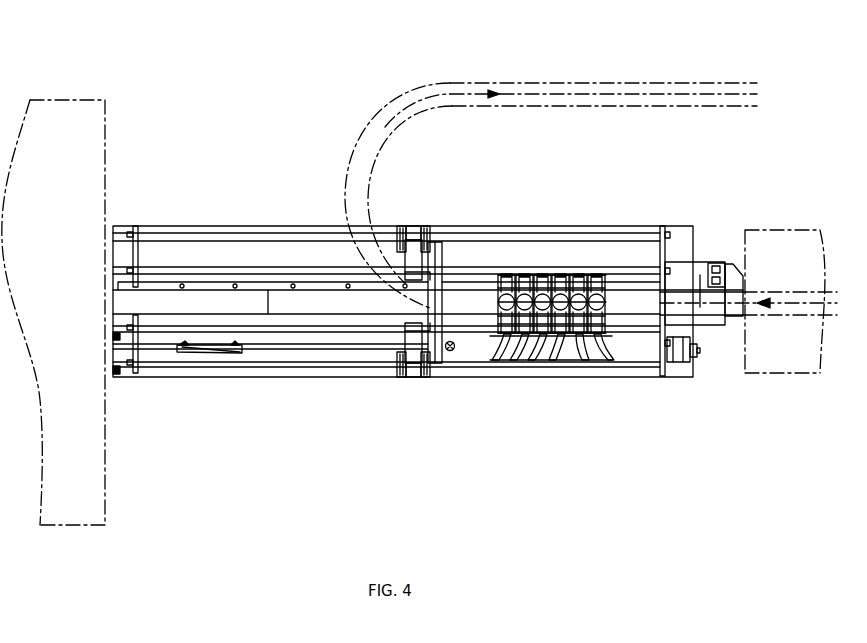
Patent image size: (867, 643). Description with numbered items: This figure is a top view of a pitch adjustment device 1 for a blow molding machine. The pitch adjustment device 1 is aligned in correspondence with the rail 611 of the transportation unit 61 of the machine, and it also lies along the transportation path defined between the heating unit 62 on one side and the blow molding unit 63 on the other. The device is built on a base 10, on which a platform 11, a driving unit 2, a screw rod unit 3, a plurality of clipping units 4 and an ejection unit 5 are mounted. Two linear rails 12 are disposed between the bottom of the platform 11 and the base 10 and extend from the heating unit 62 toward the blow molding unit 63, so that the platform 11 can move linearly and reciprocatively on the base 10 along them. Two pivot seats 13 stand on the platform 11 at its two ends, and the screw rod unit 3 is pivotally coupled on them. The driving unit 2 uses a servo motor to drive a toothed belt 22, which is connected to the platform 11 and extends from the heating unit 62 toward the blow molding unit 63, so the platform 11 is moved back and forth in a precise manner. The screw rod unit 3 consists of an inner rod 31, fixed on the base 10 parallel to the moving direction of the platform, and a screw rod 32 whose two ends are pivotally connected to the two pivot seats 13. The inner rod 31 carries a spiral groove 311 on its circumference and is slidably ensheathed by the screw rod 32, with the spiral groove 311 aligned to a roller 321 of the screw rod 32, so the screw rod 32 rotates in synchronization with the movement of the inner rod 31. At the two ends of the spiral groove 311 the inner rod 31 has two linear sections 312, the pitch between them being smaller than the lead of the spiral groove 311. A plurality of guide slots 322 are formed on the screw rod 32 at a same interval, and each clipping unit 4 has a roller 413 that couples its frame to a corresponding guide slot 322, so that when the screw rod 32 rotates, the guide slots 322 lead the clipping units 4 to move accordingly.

The pitch adjustment device 1 is at (268, 146).
The driving unit 2 is at (738, 246).
The screw rod unit 3 is at (518, 365).
The clipping units 4 is at (490, 282).
The ejection unit 5 is at (415, 222).
The base 10 is at (160, 227).
The platform 11 is at (623, 283).
The linear rails 12 is at (260, 287).
The pivot seats 13 is at (437, 357).
The toothed belt 22 is at (700, 326).
The inner rod 31 is at (240, 348).
The spiral groove 311 is at (323, 348).
The linear sections 312 is at (149, 348).
The screw rod 32 is at (643, 352).
The roller 321 is at (457, 348).
The guide slots 322 is at (530, 362).
The roller 413 is at (592, 355).
The transportation unit 61 is at (370, 99).
The rail 611 is at (538, 108).
The heating unit 62 is at (792, 370).
The blow molding unit 63 is at (63, 117).